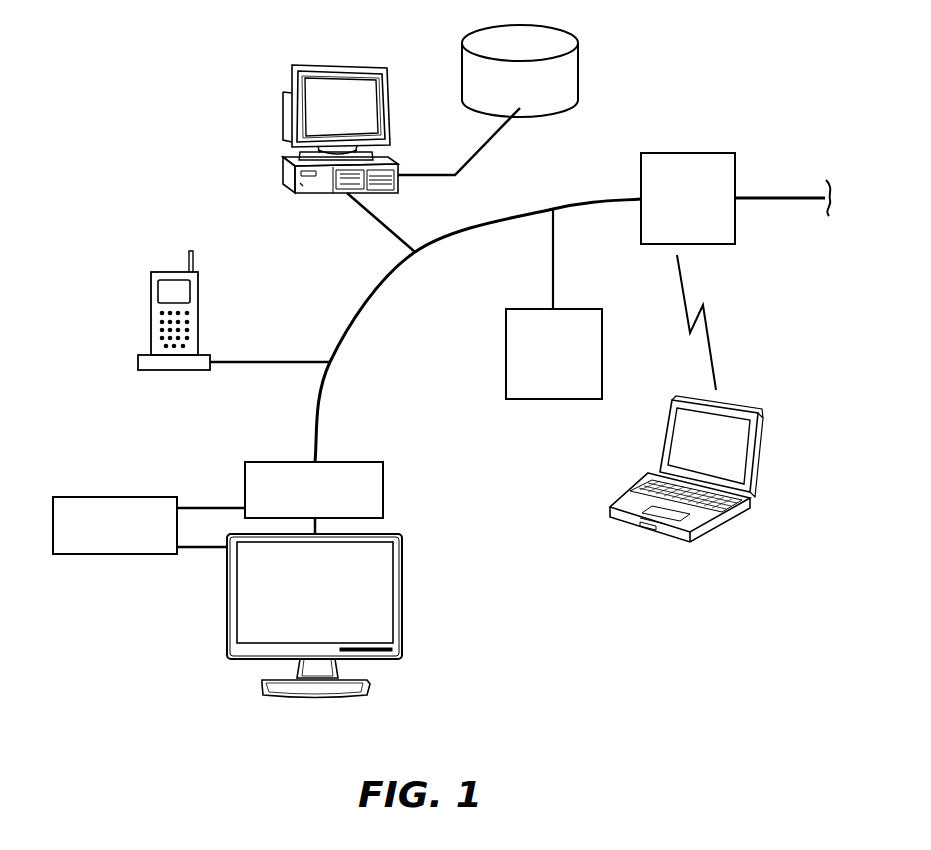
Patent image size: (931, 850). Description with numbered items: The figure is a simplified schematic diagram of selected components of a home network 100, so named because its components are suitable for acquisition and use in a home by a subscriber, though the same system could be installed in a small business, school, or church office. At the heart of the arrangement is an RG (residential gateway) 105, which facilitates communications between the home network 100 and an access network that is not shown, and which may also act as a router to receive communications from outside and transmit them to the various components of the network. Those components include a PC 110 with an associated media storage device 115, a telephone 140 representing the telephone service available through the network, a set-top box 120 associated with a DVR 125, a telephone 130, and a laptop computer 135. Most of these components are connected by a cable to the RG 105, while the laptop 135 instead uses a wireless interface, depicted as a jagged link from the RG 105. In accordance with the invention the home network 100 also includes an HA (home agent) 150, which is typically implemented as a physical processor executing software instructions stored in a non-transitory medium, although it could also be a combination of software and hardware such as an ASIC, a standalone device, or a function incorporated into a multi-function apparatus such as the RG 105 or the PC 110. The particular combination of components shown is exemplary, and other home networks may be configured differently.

The home network 100 is at (98, 138).
The residential gateway 105 is at (690, 153).
The PC 110 is at (282, 170).
The media storage device 115 is at (580, 68).
The set-top box 120 is at (385, 492).
The DVR 125 is at (116, 495).
The telephone 130 is at (403, 596).
The laptop computer 135 is at (720, 520).
The telephone 140 is at (151, 312).
The home agent 150 is at (552, 400).